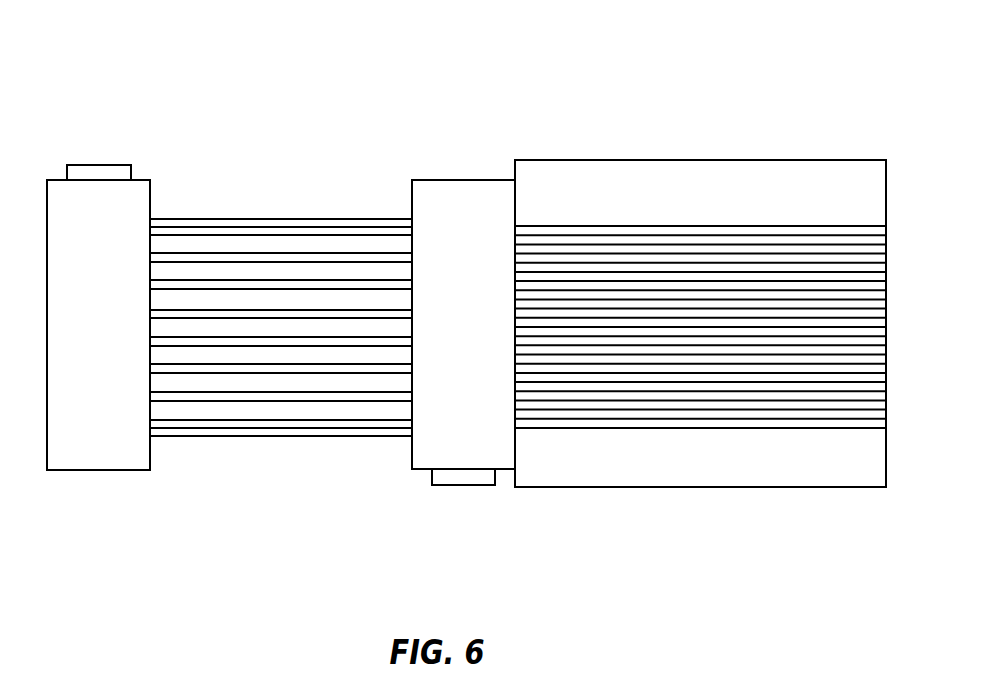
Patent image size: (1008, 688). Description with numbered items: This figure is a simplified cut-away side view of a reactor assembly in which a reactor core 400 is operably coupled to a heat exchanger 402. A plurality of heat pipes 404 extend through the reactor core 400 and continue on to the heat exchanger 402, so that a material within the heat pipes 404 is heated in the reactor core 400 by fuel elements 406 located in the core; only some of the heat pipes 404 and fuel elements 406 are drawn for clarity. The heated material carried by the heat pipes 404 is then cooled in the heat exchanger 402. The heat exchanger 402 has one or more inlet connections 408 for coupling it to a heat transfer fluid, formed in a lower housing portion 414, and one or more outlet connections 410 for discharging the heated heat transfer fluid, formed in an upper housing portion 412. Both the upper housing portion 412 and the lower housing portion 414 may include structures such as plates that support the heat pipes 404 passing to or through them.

The reactor core 400 is at (787, 130).
The heat exchanger 402 is at (340, 199).
The heat pipes 404 is at (237, 232).
The fuel elements 406 is at (578, 243).
The inlet connections 408 is at (88, 165).
The outlet connections 410 is at (467, 485).
The upper housing portion 412 is at (108, 470).
The lower housing portion 414 is at (463, 180).